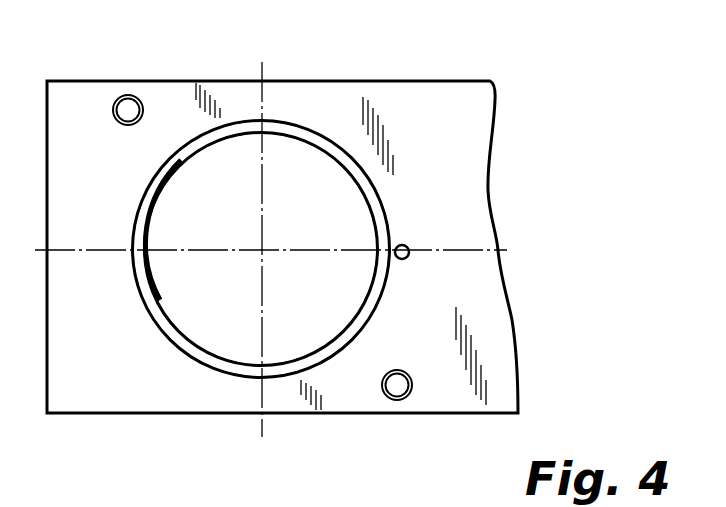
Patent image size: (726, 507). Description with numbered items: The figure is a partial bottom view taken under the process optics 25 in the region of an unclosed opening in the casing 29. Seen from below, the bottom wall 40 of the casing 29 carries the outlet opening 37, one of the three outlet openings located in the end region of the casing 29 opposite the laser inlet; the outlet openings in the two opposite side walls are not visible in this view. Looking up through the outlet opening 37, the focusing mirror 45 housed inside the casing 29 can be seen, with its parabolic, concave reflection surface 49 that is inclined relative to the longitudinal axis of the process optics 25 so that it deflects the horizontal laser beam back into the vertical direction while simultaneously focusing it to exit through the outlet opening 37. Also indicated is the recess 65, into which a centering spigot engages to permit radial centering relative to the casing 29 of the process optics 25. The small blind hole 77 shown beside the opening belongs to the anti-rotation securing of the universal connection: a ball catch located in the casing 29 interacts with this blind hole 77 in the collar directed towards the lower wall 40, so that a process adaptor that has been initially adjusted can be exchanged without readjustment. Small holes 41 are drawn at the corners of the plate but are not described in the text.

The process optics 25 is at (512, 320).
The casing 29 is at (470, 285).
The outlet opening 37 is at (187, 313).
The bottom wall 40 is at (112, 348).
The mounting holes 41 is at (175, 79).
The focusing mirror 45 is at (335, 217).
The reflection surface 49 is at (313, 176).
The recess 65 is at (317, 360).
The blind hole 77 is at (407, 243).